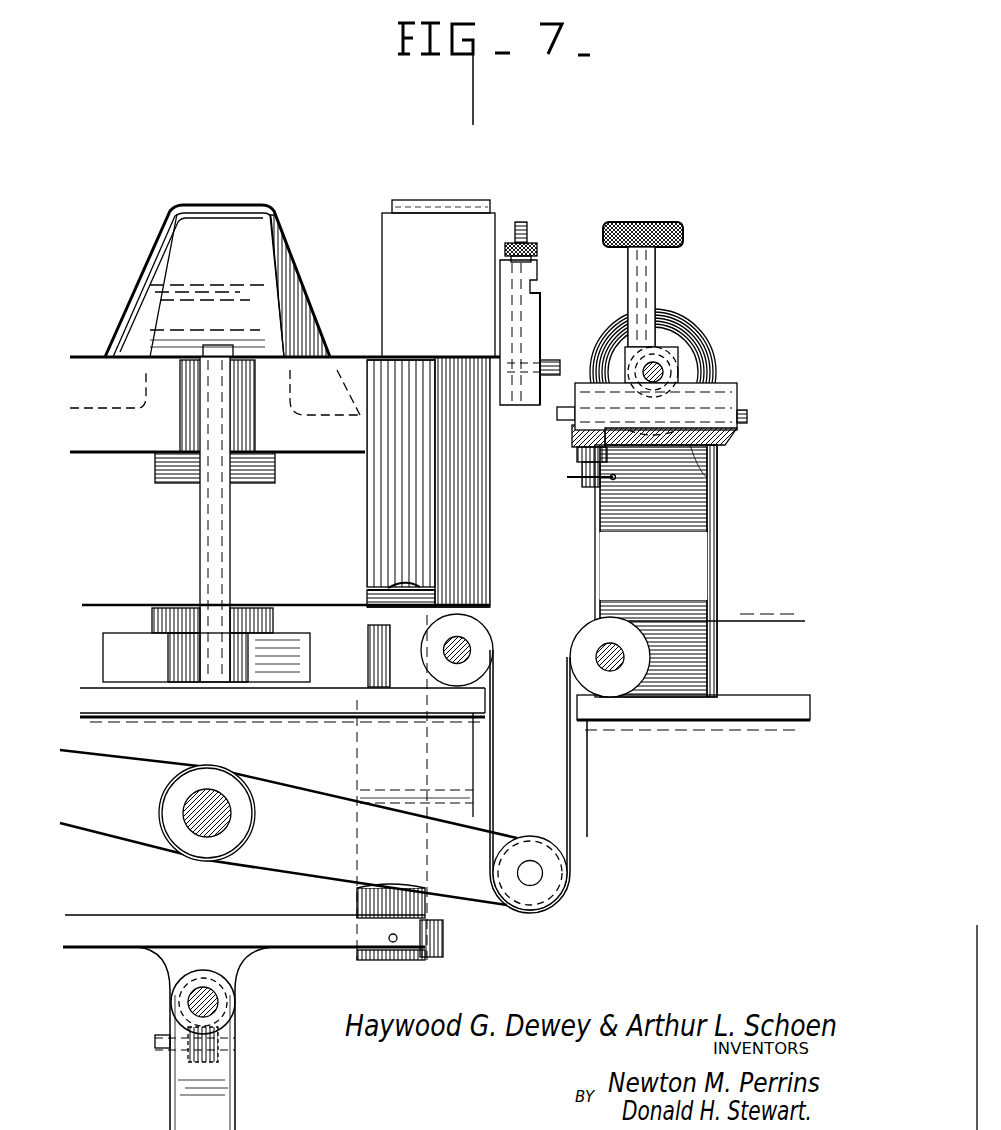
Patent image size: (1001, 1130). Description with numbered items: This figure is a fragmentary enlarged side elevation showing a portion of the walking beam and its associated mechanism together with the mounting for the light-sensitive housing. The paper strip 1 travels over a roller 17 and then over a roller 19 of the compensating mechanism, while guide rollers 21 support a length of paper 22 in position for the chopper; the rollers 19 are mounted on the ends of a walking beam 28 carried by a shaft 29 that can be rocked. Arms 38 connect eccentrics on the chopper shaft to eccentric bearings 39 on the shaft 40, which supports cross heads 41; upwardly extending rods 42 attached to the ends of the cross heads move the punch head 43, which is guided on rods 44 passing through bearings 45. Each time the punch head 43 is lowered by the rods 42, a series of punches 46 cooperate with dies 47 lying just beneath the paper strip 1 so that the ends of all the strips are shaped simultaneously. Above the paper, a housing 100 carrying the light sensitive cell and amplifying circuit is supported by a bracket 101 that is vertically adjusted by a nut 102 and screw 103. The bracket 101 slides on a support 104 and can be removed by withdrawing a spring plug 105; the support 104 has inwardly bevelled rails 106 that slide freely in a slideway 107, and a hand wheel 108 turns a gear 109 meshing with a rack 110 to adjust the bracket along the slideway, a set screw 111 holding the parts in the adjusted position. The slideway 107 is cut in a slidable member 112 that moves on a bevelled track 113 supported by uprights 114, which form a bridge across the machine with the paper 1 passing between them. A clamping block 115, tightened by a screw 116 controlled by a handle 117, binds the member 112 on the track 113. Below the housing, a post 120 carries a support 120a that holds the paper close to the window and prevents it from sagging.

The paper strip 1 is at (731, 620).
The roller 17 is at (604, 650).
The roller 19 is at (532, 850).
The guide roller 21 is at (478, 640).
The length of paper 22 is at (262, 602).
The walking beam 28 is at (385, 828).
The shaft 29 is at (222, 800).
The arm 38 is at (207, 1105).
The eccentric bearing 39 is at (237, 1025).
The shaft 40 is at (210, 1003).
The cross head 41 is at (215, 918).
The rod 42 is at (385, 530).
The punch head 43 is at (217, 281).
The guide rod 44 is at (215, 528).
The bearing 45 is at (195, 430).
The punch 46 is at (255, 480).
The die 47 is at (192, 610).
The housing 100 is at (438, 278).
The bracket 101 is at (543, 410).
The nut 102 is at (537, 250).
The screw 103 is at (527, 232).
The support 104 is at (541, 298).
The spring plug 105 is at (552, 358).
The bevelled rail 106 is at (575, 408).
The slideway 107 is at (747, 410).
The hand wheel 108 is at (676, 332).
The gear 109 is at (680, 362).
The rack 110 is at (712, 386).
The set screw 111 is at (660, 221).
The slidable member 112 is at (737, 440).
The bevelled track 113 is at (722, 482).
The upright 114 is at (676, 552).
The clamping block 115 is at (572, 435).
The screw 116 is at (588, 482).
The handle 117 is at (572, 476).
The post 120 is at (384, 666).
The support 120a is at (418, 612).